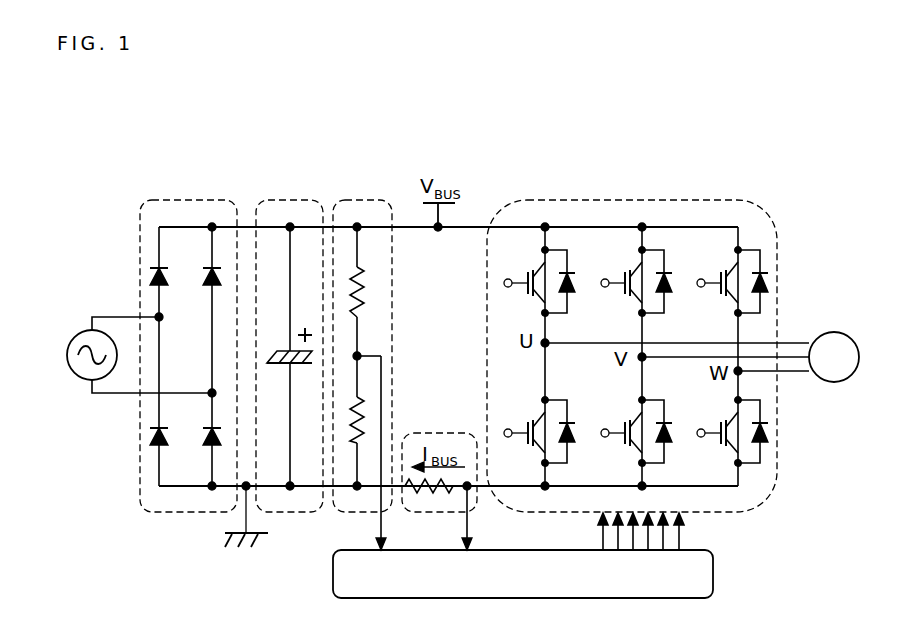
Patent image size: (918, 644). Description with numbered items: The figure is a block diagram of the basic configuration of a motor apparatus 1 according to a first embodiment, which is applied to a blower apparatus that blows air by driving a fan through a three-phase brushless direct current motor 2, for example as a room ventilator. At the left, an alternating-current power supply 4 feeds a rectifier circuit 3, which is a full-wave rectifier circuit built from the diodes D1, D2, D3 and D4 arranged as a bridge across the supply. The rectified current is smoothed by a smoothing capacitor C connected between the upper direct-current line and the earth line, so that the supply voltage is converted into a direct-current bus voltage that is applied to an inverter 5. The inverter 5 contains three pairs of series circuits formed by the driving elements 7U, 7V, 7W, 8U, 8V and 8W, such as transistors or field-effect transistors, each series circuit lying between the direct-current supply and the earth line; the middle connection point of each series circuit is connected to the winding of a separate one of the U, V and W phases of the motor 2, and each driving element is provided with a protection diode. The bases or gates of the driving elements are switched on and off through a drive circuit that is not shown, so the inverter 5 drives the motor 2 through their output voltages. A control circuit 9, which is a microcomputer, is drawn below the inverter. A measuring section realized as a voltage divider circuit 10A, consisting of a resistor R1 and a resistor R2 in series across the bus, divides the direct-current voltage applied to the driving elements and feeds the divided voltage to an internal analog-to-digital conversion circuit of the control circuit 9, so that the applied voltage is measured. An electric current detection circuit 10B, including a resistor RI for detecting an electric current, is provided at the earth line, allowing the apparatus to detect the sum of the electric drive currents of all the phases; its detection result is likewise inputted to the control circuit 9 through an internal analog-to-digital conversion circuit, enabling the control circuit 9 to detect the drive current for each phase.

The motor apparatus 1 is at (808, 136).
The three-phase brushless direct current motor 2 is at (833, 332).
The rectifier circuit 3 is at (205, 200).
The alternating-current power supply 4 is at (92, 381).
The inverter 5 is at (687, 200).
The control circuit 9 is at (716, 575).
The voltage divider circuit 10A is at (354, 200).
The electric current detection circuit 10B is at (438, 433).
The smoothing capacitor C is at (306, 200).
The diode D1 is at (151, 279).
The diode D2 is at (208, 284).
The diode D3 is at (151, 439).
The diode D4 is at (208, 446).
The resistor R1 is at (366, 284).
The resistor R2 is at (364, 400).
The resistor for detecting an electric current RI is at (433, 494).
The driving element 7U is at (525, 294).
The driving element 7V is at (622, 294).
The driving element 7W is at (718, 294).
The driving element 8U is at (527, 418).
The driving element 8V is at (624, 418).
The driving element 8W is at (720, 418).